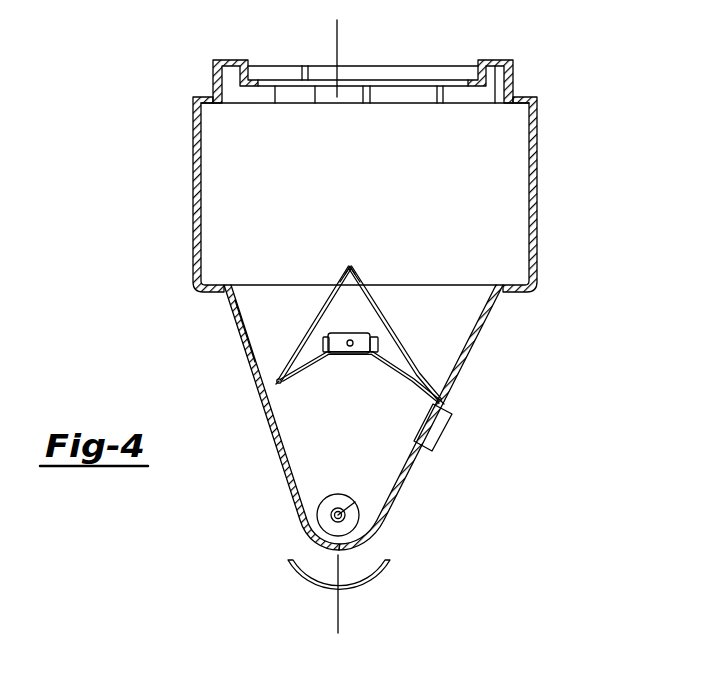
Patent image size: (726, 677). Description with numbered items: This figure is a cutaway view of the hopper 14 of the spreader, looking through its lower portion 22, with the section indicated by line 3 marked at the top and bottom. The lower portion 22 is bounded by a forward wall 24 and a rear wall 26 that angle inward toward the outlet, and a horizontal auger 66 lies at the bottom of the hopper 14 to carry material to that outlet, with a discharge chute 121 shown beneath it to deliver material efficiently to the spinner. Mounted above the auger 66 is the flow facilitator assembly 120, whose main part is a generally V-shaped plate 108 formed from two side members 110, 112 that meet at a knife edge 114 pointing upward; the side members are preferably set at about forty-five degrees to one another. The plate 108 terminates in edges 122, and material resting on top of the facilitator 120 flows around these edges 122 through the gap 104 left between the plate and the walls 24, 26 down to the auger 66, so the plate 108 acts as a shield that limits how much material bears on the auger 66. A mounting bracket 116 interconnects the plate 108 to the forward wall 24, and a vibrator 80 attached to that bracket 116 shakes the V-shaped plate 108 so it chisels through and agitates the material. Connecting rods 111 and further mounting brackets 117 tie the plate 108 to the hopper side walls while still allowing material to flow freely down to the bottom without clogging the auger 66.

The section line 3- 3 is at (318, 31).
The hopper 14 is at (568, 226).
The lower portion 22 is at (346, 420).
The forward wall 24 is at (459, 372).
The rear wall 26 is at (233, 319).
The horizontal auger 66 is at (324, 503).
The vibrator 80 is at (446, 436).
The gap 104 is at (246, 353).
The V-shaped plate 108 is at (334, 287).
The side member 110 is at (312, 325).
The connecting rod 111 is at (312, 364).
The side member 112 is at (390, 322).
The knife edge 114 is at (348, 265).
The mounting bracket 116 is at (426, 391).
The mounting bracket 117 is at (380, 344).
The flow facilitator assembly 120 is at (386, 293).
The discharge chute 121 is at (313, 584).
The edges 122 is at (279, 381).